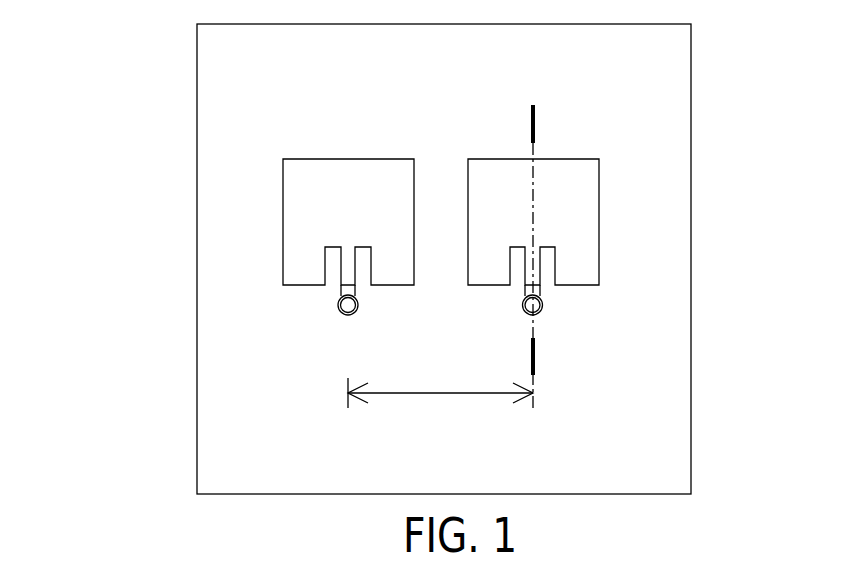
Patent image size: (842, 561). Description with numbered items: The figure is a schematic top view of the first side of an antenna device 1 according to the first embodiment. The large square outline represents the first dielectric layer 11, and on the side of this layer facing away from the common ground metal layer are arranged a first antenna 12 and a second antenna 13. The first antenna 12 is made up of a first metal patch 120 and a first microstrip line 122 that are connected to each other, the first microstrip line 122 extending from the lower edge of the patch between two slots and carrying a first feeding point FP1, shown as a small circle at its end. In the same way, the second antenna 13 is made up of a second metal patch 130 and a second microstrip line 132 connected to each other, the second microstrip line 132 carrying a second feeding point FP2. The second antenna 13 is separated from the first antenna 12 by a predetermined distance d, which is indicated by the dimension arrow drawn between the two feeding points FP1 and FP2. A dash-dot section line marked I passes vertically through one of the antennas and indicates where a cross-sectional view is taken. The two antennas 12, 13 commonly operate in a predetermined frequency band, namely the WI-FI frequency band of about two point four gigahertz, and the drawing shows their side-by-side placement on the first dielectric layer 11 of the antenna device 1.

The antenna device 1 is at (148, 63).
The first dielectric layer 11 is at (691, 260).
The first antenna 12 is at (96, 240).
The second antenna 13 is at (96, 370).
The first metal patch 120 is at (582, 159).
The first microstrip line 122 is at (538, 278).
The second metal patch 130 is at (349, 159).
The second microstrip line 132 is at (350, 278).
The first feeding point FP1 is at (353, 315).
The second feeding point FP2 is at (540, 315).
The section line I- I is at (531, 123).
The predetermined distance d is at (440, 408).